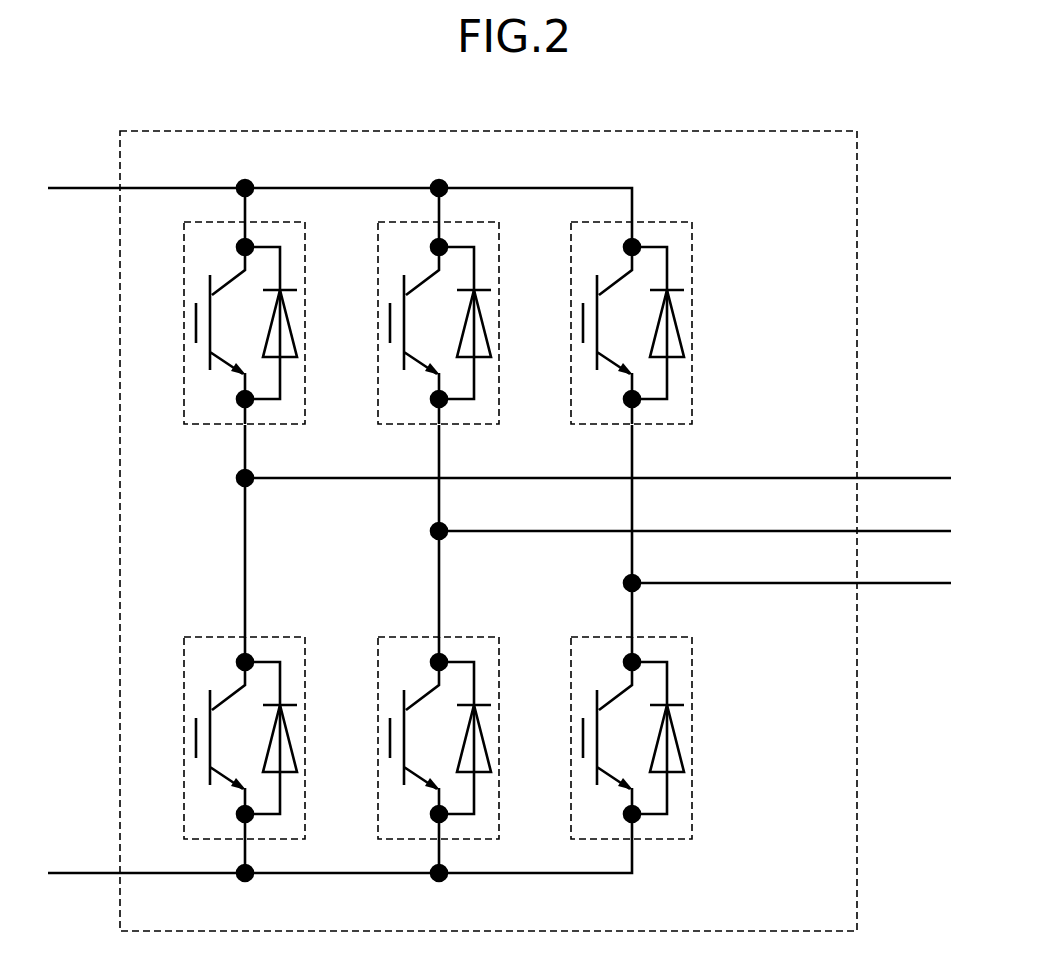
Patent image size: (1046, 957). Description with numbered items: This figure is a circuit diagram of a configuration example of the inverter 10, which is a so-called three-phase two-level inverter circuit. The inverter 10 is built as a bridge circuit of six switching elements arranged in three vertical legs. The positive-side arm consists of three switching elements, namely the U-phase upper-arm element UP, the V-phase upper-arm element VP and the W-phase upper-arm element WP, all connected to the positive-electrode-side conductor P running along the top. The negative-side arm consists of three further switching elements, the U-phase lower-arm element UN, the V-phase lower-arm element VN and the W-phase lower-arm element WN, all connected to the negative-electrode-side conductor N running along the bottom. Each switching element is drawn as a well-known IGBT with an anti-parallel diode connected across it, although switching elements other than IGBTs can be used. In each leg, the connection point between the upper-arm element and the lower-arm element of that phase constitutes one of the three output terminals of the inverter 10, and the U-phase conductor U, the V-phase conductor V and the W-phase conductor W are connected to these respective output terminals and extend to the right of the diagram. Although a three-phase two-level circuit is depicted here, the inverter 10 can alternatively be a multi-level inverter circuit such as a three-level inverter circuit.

The inverter 10 is at (827, 131).
The positive-electrode-side conductor P is at (67, 188).
The negative-electrode-side conductor N is at (67, 873).
The U-phase conductor U is at (925, 477).
The V-phase conductor V is at (925, 530).
The W-phase conductor W is at (925, 583).
The U-phase upper-arm element UP is at (305, 405).
The V-phase upper-arm element VP is at (499, 405).
The W-phase upper-arm element WP is at (692, 405).
The U-phase lower-arm element UN is at (306, 638).
The V-phase lower-arm element VN is at (500, 638).
The W-phase lower-arm element WN is at (693, 638).